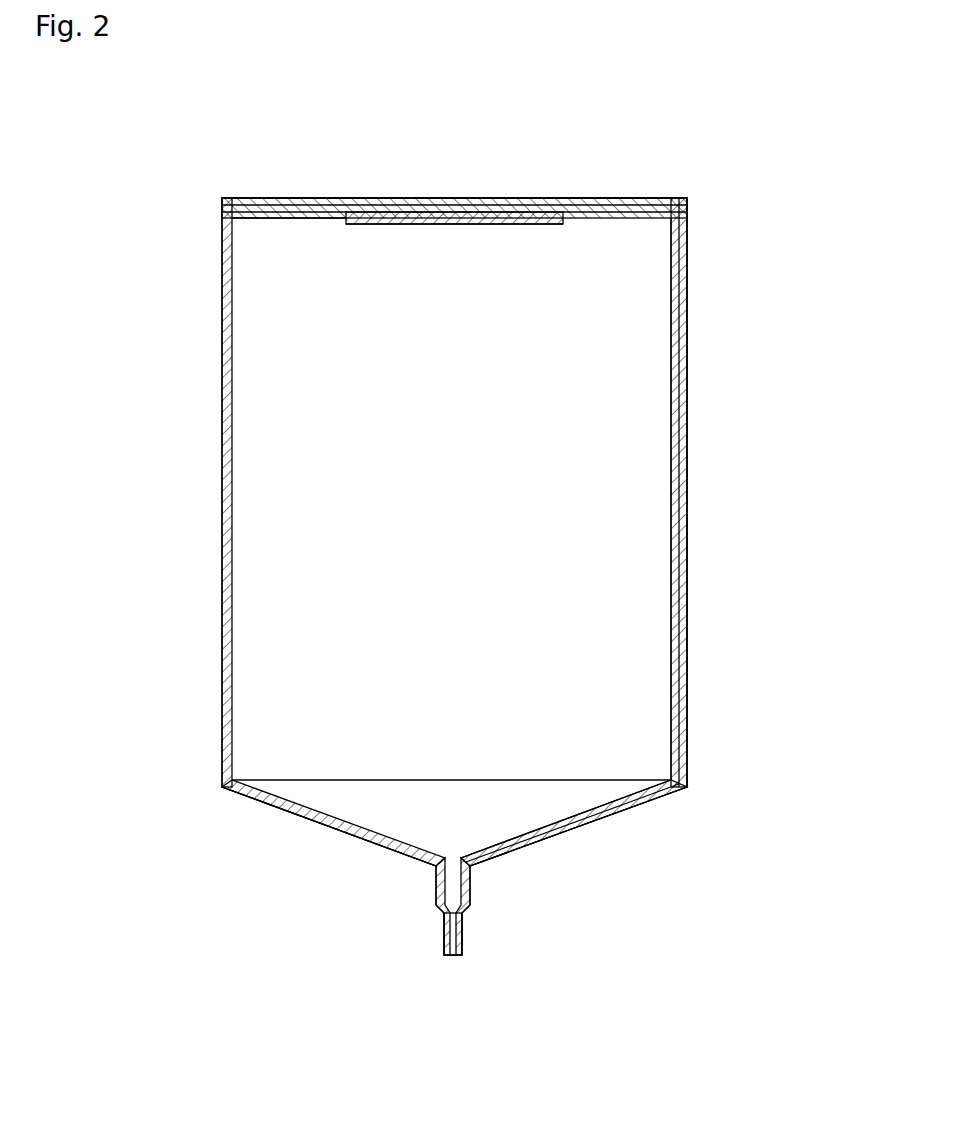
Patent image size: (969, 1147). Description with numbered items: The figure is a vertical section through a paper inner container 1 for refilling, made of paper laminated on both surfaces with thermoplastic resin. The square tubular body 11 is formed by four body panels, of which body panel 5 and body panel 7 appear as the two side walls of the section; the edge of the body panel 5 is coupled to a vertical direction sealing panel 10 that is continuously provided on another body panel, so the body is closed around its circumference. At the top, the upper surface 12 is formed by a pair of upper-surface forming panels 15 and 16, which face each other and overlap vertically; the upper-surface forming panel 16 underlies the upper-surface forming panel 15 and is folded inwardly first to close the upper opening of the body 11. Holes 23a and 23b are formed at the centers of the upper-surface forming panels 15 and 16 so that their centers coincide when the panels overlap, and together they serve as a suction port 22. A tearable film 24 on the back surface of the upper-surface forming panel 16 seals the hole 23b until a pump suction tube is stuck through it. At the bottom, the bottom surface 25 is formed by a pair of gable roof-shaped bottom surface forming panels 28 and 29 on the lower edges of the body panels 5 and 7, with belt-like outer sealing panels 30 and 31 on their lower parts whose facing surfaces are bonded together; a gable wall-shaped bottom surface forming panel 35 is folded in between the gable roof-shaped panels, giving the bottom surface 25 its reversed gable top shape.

The paper inner container 1 is at (689, 298).
The body panel 5 is at (688, 418).
The body panel 7 is at (222, 470).
The vertical direction sealing panel 10 is at (671, 444).
The body 11 is at (687, 531).
The upper surface 12 is at (612, 197).
The upper-surface forming panel 15 is at (278, 197).
The upper-surface forming panel 16 is at (273, 218).
The suction port 22 is at (403, 190).
The hole 23a is at (509, 197).
The hole 23b is at (437, 197).
The film 24 is at (428, 224).
The bottom surface 25 is at (319, 866).
The gable roof-shaped bottom surface forming panel 28 is at (590, 827).
The gable roof-shaped bottom surface forming panel 29 is at (280, 810).
The outer sealing panel 30 is at (462, 936).
The outer sealing panel 31 is at (444, 940).
The gable wall-shaped bottom surface forming panel 35 is at (490, 817).